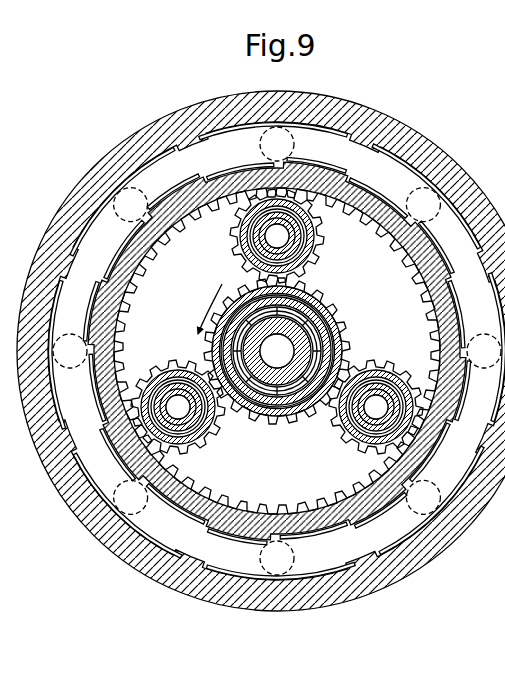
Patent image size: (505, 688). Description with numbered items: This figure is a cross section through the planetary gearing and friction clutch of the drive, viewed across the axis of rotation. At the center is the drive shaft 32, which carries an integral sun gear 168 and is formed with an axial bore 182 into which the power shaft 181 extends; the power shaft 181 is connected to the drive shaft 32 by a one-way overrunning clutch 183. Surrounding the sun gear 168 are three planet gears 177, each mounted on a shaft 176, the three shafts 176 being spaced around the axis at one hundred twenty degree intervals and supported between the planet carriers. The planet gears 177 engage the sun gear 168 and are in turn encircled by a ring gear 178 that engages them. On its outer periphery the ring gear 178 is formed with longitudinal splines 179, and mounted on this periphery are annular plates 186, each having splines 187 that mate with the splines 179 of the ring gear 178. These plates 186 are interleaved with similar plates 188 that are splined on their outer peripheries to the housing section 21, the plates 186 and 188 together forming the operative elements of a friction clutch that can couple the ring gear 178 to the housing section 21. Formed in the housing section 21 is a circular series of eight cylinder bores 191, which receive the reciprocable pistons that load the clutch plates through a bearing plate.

The housing section 21 is at (102, 545).
The drive shaft 32 is at (253, 420).
The sun gear 168 is at (340, 319).
The shaft 176 is at (252, 245).
The planet gear 177 is at (321, 251).
The ring gear 178 is at (133, 318).
The longitudinal splines 179 is at (217, 174).
The power shaft 181 is at (277, 351).
The axial bore 182 is at (219, 299).
The one-way overrunning clutch 183 is at (302, 420).
The annular plates 186 is at (277, 332).
The splines 187 is at (150, 206).
The plates 188 is at (190, 138).
The cylinder bores 191 is at (294, 147).